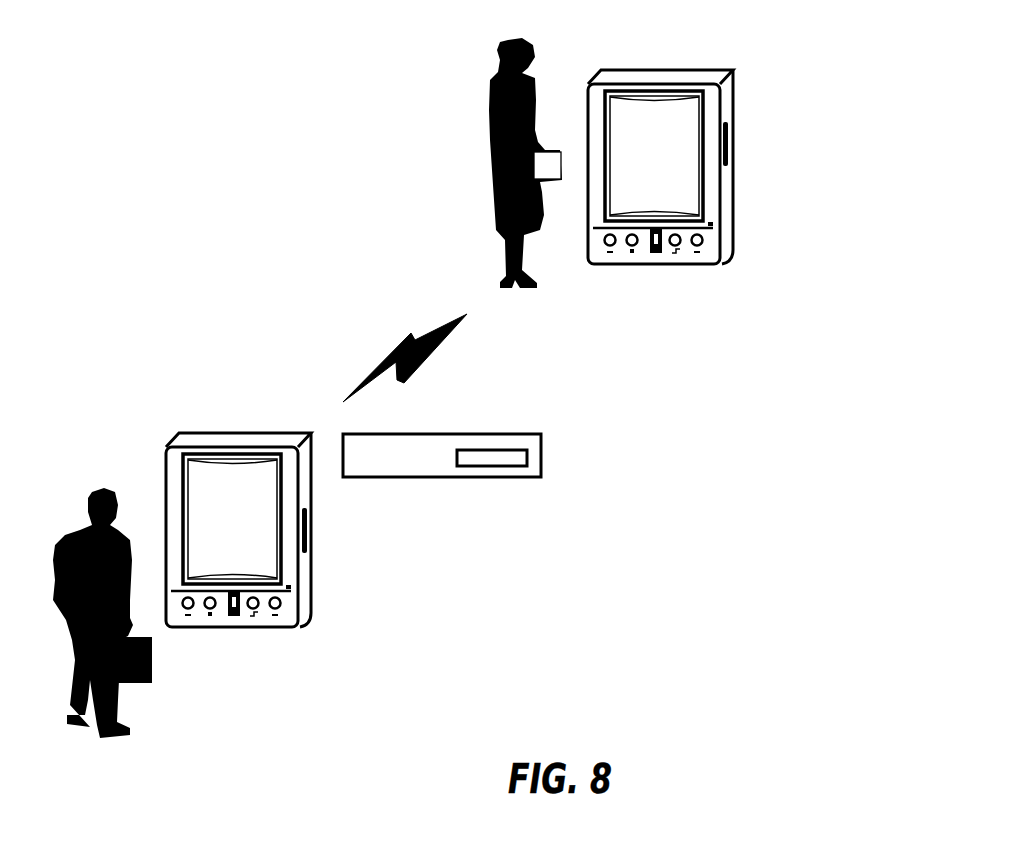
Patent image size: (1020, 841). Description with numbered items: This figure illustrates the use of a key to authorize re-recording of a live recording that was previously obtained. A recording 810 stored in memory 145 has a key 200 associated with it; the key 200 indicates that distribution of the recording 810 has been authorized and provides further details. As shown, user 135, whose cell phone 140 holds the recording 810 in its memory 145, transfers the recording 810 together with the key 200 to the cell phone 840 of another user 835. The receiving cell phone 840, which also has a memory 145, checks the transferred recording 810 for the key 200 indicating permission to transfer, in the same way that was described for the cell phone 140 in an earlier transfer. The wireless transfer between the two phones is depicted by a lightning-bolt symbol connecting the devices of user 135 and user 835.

The user 835 is at (497, 238).
The cell phone 840 is at (660, 223).
The memory 145 is at (728, 147).
The recording 810 is at (423, 443).
The key 200 is at (515, 458).
The user 135 is at (87, 729).
The cell phone 140 is at (238, 587).